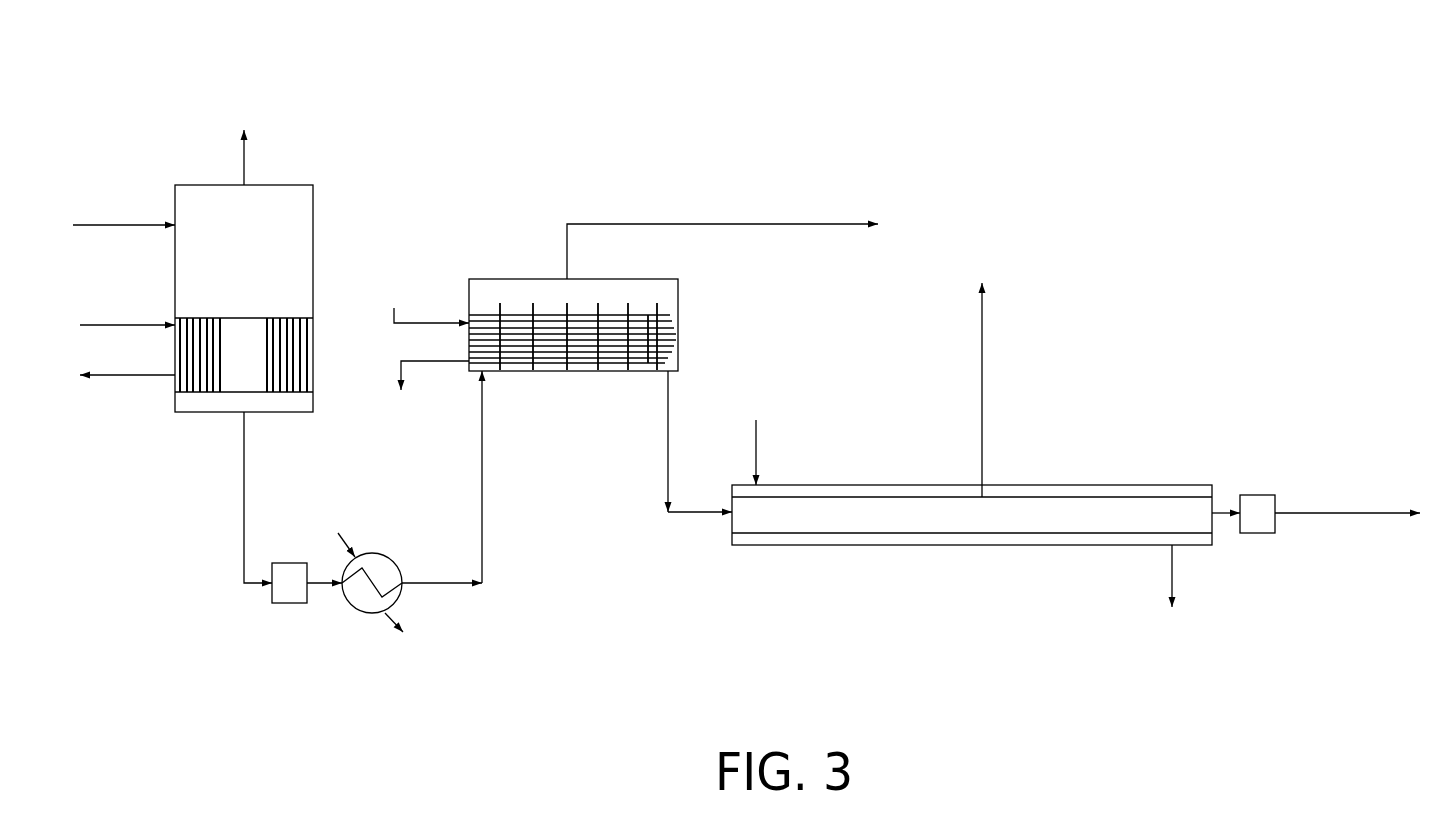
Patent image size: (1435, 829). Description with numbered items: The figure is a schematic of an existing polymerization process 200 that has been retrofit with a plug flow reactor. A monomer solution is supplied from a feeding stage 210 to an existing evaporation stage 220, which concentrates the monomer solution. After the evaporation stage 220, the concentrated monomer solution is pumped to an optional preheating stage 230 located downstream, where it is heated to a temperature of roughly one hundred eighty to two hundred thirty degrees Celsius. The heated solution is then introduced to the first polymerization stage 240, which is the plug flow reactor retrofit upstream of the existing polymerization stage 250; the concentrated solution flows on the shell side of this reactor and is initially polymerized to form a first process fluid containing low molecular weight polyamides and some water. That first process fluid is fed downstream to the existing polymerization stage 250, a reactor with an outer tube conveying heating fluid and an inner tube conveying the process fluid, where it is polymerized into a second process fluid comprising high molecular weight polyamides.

The polymerization process 200 is at (1133, 152).
The feeding stage 210 is at (121, 206).
The evaporation stage 220 is at (315, 193).
The preheating stage 230 is at (358, 613).
The first polymerization stage 240 is at (587, 372).
The existing polymerization stage 250 is at (813, 545).